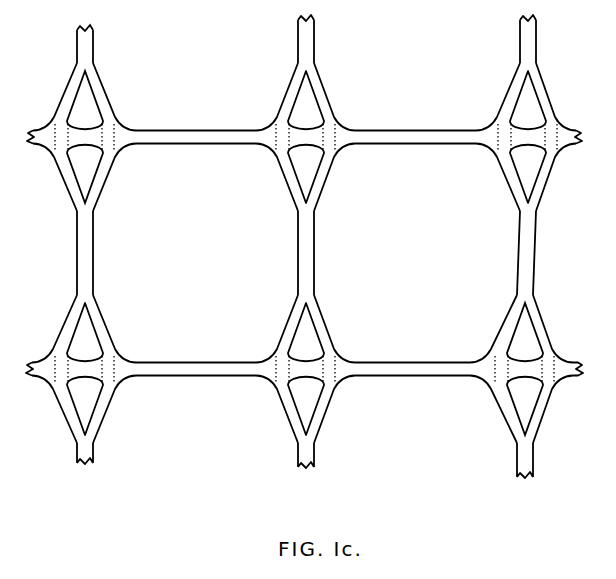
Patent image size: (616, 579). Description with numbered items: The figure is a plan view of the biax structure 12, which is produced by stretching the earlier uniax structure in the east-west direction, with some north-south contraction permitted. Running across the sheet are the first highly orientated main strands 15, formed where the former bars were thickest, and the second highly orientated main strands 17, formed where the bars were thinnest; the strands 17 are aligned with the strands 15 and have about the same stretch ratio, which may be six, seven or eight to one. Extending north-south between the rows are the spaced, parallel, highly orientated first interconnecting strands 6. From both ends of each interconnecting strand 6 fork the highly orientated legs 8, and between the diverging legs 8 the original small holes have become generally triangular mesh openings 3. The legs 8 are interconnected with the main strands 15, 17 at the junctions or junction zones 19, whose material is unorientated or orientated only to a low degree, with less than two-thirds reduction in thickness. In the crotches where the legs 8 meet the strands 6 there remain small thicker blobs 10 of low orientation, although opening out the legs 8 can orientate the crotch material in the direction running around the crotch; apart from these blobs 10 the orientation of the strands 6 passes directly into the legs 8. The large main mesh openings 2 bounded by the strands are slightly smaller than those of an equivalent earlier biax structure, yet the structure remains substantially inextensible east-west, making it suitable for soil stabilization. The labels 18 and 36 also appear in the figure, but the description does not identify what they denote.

The blobs 10 is at (85, 67).
The legs 8 is at (100, 100).
The second highly orientated main strands 17 is at (85, 137).
The generally triangular mesh openings 3 is at (91, 176).
The junctions or junction zones 19 is at (58, 138).
The structure 12 is at (199, 128).
The first highly orientated main strands 15 is at (205, 137).
The main mesh openings 2 is at (198, 241).
The first interconnecting strands 6 is at (88, 253).
The junction bond area 18 is at (526, 371).
The junction zone 36 is at (548, 370).